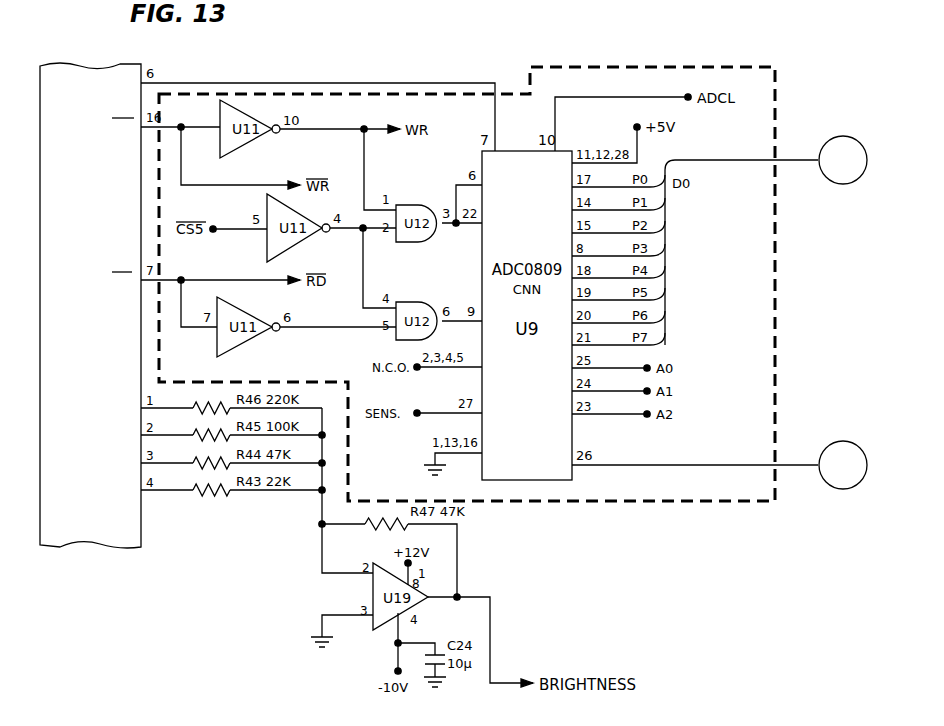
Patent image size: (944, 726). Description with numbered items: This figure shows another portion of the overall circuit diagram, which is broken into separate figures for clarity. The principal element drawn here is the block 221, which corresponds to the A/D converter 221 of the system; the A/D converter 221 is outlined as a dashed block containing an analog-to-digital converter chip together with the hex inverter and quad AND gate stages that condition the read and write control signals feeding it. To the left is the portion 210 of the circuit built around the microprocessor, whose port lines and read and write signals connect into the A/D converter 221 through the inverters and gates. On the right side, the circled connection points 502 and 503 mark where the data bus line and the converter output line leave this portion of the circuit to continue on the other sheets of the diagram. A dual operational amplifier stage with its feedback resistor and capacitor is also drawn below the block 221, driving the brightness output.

The microcontroller 80C31 U1 210 is at (41, 97).
The A/D converter 221 is at (776, 88).
The data bus connection 502 is at (843, 160).
The end-of-conversion connection 503 is at (843, 465).